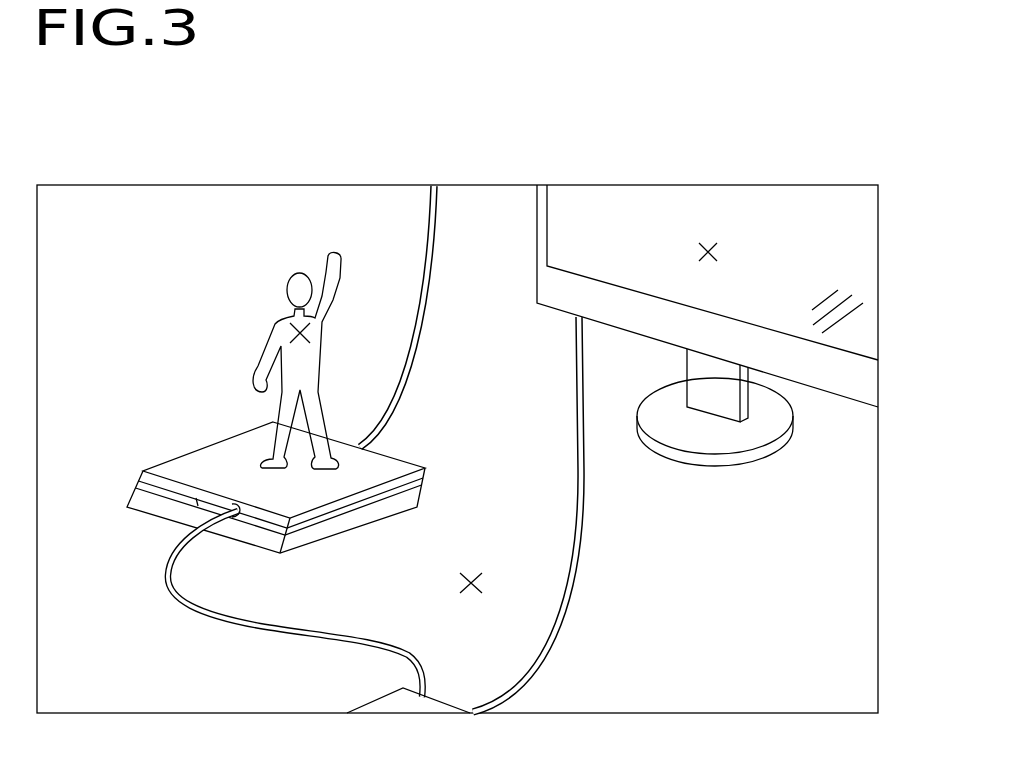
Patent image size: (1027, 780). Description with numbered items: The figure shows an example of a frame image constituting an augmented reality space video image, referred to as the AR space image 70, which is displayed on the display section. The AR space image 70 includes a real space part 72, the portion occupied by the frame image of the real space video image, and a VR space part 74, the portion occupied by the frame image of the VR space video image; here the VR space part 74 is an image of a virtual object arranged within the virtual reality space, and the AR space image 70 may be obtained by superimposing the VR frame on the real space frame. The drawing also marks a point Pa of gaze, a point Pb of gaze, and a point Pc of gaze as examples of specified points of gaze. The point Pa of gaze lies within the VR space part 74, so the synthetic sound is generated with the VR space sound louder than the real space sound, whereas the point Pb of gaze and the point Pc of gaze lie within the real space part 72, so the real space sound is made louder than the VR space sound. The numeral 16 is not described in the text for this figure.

The display image 16 is at (609, 9).
The AR space image 70 is at (791, 184).
The real space part 72 is at (863, 502).
The VR space part 74 is at (318, 362).
The point of gaze Pa is at (288, 336).
The point of gaze Pb is at (698, 250).
The point of gaze Pc is at (470, 573).